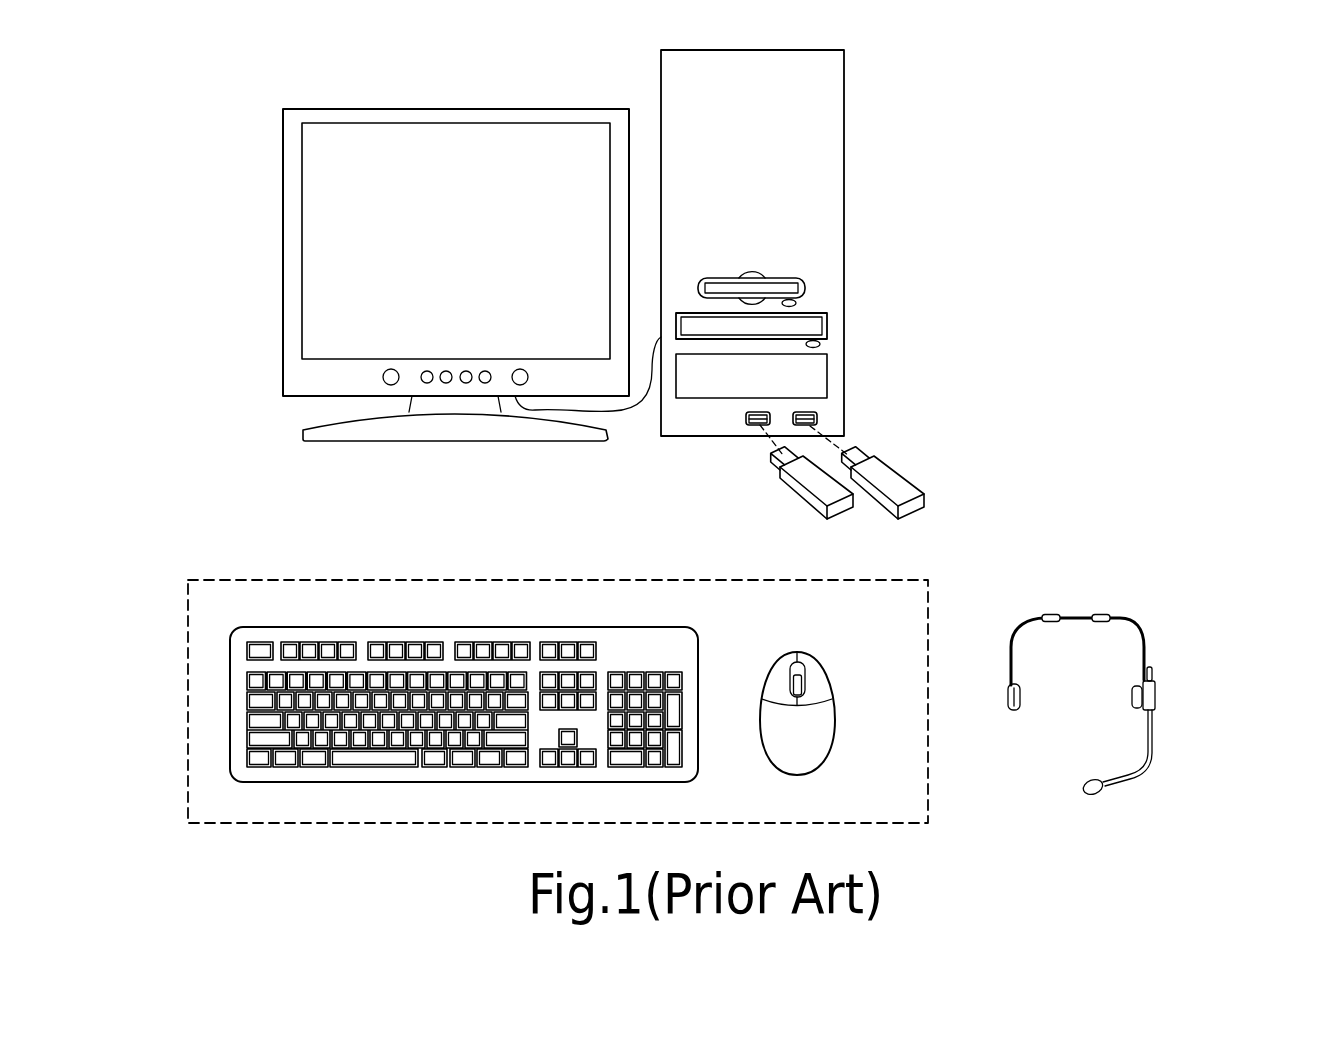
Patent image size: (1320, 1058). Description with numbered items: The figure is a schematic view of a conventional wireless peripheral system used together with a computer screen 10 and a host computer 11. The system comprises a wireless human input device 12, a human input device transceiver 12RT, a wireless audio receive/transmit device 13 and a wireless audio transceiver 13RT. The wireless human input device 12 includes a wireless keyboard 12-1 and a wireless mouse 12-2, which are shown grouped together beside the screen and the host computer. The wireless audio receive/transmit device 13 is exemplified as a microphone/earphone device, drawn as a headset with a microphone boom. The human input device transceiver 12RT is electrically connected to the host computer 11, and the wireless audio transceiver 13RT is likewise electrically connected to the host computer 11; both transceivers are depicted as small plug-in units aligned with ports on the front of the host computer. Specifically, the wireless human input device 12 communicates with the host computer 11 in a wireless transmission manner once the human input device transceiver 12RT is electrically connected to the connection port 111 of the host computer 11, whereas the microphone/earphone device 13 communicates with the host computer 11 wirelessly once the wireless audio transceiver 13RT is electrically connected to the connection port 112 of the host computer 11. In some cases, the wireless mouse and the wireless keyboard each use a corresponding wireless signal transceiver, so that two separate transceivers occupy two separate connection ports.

The computer screen 10 is at (508, 143).
The host computer 11 is at (787, 274).
The connection port 111 is at (803, 410).
The connection port 112 is at (744, 419).
The wireless human input device 12 is at (528, 592).
The wireless keyboard 12-1 is at (625, 650).
The wireless mouse 12-2 is at (812, 683).
The human input device transceiver 12RT is at (893, 483).
The wireless audio receive/transmit device 13 is at (1142, 632).
The wireless audio transceiver 13RT is at (800, 492).